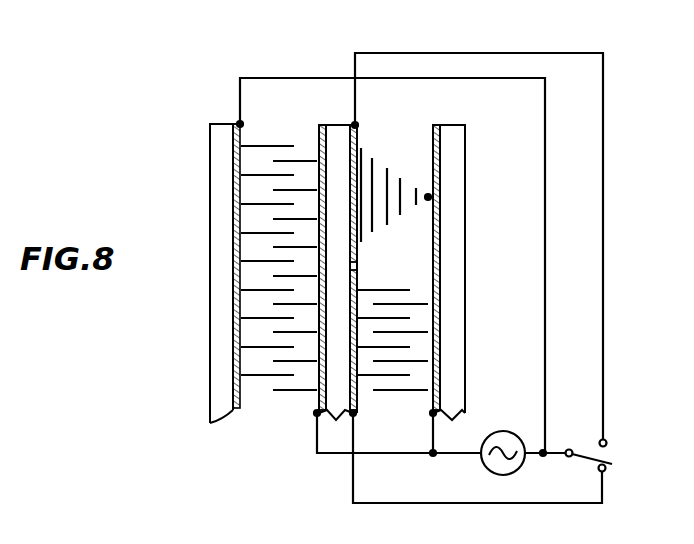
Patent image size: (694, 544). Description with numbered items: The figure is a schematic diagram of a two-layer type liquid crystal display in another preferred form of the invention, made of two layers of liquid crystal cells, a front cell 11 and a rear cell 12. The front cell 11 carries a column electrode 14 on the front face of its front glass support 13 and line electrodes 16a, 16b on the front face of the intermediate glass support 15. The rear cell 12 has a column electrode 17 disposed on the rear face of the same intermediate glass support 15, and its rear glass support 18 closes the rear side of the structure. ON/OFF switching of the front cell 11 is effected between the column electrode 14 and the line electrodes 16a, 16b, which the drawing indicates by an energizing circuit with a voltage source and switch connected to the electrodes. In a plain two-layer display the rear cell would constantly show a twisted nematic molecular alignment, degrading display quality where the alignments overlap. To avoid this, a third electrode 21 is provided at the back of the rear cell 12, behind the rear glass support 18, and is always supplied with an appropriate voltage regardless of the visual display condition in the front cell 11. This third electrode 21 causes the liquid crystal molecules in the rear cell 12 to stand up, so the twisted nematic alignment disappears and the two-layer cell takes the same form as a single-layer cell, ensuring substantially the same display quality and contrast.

The front liquid crystal cell 11 is at (477, 43).
The rear liquid crystal cell 12 is at (333, 43).
The front glass support 13 is at (457, 138).
The column electrode 14 is at (438, 128).
The intermediate glass support 15 is at (336, 140).
The line electrode 16a is at (357, 127).
The line electrode 16b is at (357, 278).
The column electrode 17 is at (318, 138).
The rear glass support 18 is at (218, 154).
The third electrode 21 is at (238, 409).